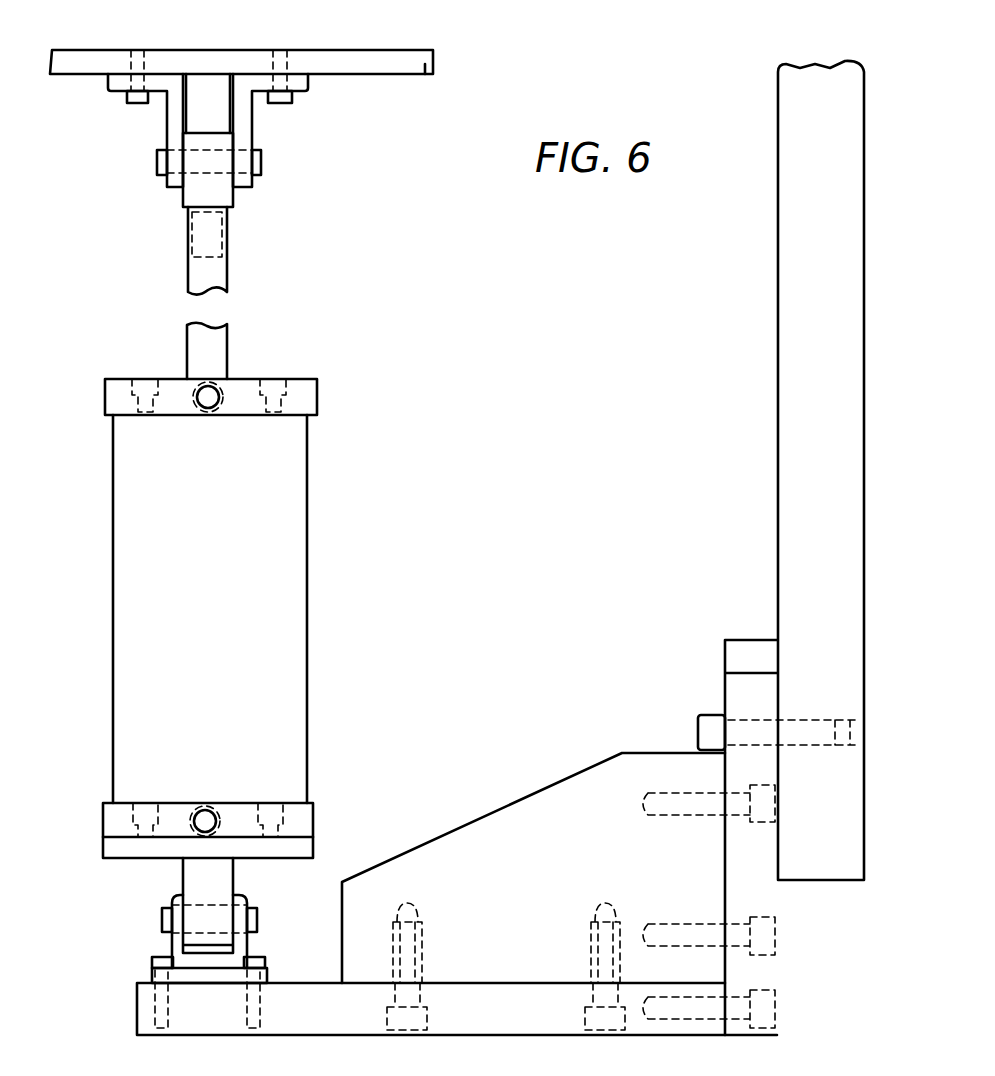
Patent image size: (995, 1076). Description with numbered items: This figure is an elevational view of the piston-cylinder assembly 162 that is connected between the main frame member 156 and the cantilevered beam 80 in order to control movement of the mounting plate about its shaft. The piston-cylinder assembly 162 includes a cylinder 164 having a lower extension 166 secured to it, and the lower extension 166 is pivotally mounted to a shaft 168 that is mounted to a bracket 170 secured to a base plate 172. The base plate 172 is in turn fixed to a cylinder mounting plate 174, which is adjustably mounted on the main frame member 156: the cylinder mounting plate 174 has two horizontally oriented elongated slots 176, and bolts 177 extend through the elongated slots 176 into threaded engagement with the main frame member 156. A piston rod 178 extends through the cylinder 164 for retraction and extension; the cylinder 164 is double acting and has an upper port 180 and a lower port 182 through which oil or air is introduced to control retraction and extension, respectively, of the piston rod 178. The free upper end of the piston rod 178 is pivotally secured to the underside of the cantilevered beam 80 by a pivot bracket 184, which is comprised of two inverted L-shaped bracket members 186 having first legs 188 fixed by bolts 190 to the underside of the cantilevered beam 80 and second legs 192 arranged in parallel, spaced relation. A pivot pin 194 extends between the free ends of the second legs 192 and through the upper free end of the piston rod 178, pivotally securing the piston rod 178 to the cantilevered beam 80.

The cantilevered beam 80 is at (418, 70).
The main frame member 156 is at (795, 425).
The piston-cylinder assembly 162 is at (404, 511).
The cylinder 164 is at (307, 628).
The lower extension 166 is at (183, 876).
The shaft 168 is at (258, 920).
The bracket 170 is at (250, 945).
The base plate 172 is at (143, 1005).
The cylinder mounting plate 174 is at (735, 683).
The elongated slots 176 is at (745, 725).
The bolts 177 is at (700, 738).
The piston rod 178 is at (226, 332).
The upper port 180 is at (220, 393).
The lower port 182 is at (213, 810).
The pivot bracket 184 is at (110, 203).
The inverted L-shaped bracket members 186 is at (218, 121).
The first legs 188 is at (108, 93).
The bolts 190 is at (138, 104).
The second legs 192 is at (165, 190).
The pivot pin 194 is at (262, 165).